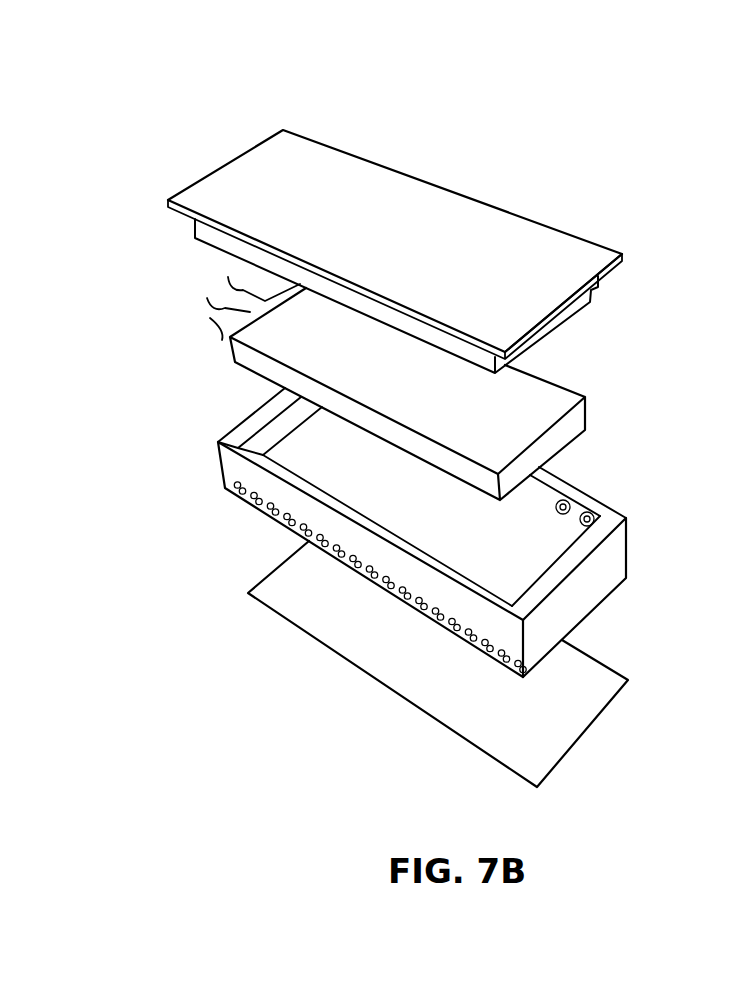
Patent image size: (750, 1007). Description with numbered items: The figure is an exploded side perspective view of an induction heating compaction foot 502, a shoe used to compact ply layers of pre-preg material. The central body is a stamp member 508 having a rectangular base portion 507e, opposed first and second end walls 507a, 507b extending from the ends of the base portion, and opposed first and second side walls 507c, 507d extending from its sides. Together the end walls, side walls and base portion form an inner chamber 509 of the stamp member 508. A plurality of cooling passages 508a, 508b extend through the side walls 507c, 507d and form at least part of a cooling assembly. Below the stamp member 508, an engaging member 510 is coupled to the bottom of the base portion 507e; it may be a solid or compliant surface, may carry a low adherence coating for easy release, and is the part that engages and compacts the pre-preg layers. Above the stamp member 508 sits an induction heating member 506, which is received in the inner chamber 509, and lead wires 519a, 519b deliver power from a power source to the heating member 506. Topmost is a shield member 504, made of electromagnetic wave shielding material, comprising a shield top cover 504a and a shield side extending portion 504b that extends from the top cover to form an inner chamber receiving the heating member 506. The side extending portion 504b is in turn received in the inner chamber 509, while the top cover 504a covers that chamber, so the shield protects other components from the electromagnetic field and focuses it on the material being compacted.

The compaction foot 502 is at (597, 145).
The shield member 504 is at (551, 248).
The shield top cover 504a is at (593, 262).
The shield side extending portion 504b is at (587, 303).
The induction heating member 506 is at (560, 402).
The first end wall 507a is at (587, 588).
The second end wall 507b is at (258, 432).
The first side wall 507c is at (397, 562).
The second side wall 507d is at (543, 490).
The rectangular base portion 507e is at (390, 503).
The stamp member 508 is at (620, 553).
The cooling passages 508a is at (574, 513).
The cooling passages 508b is at (483, 642).
The inner chamber 509 is at (343, 475).
The engaging member 510 is at (593, 687).
The lead wire 519a is at (223, 306).
The lead wire 519b is at (238, 285).